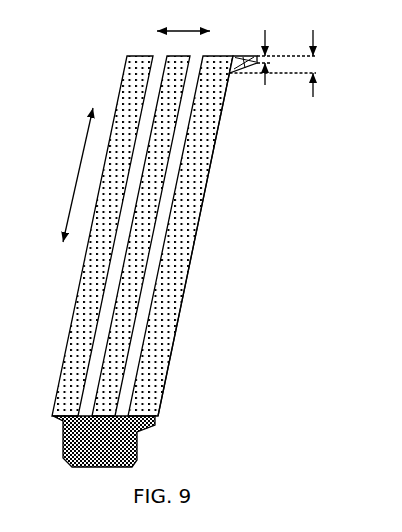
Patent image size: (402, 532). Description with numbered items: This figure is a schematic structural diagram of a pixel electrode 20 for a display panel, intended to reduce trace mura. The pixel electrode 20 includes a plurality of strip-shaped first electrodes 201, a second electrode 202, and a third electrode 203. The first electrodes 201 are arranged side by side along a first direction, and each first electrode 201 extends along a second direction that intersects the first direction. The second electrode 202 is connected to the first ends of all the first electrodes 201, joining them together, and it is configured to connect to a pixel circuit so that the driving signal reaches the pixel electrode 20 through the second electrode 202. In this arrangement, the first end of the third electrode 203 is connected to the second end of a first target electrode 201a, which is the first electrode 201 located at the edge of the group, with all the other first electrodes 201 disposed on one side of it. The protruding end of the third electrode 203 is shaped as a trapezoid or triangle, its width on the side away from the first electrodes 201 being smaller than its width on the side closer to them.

The pixel electrode 20 is at (109, 40).
The first electrode 201 is at (252, 232).
The first target electrode 201a is at (192, 250).
The second electrode 202 is at (138, 448).
The third electrode 203 is at (234, 67).